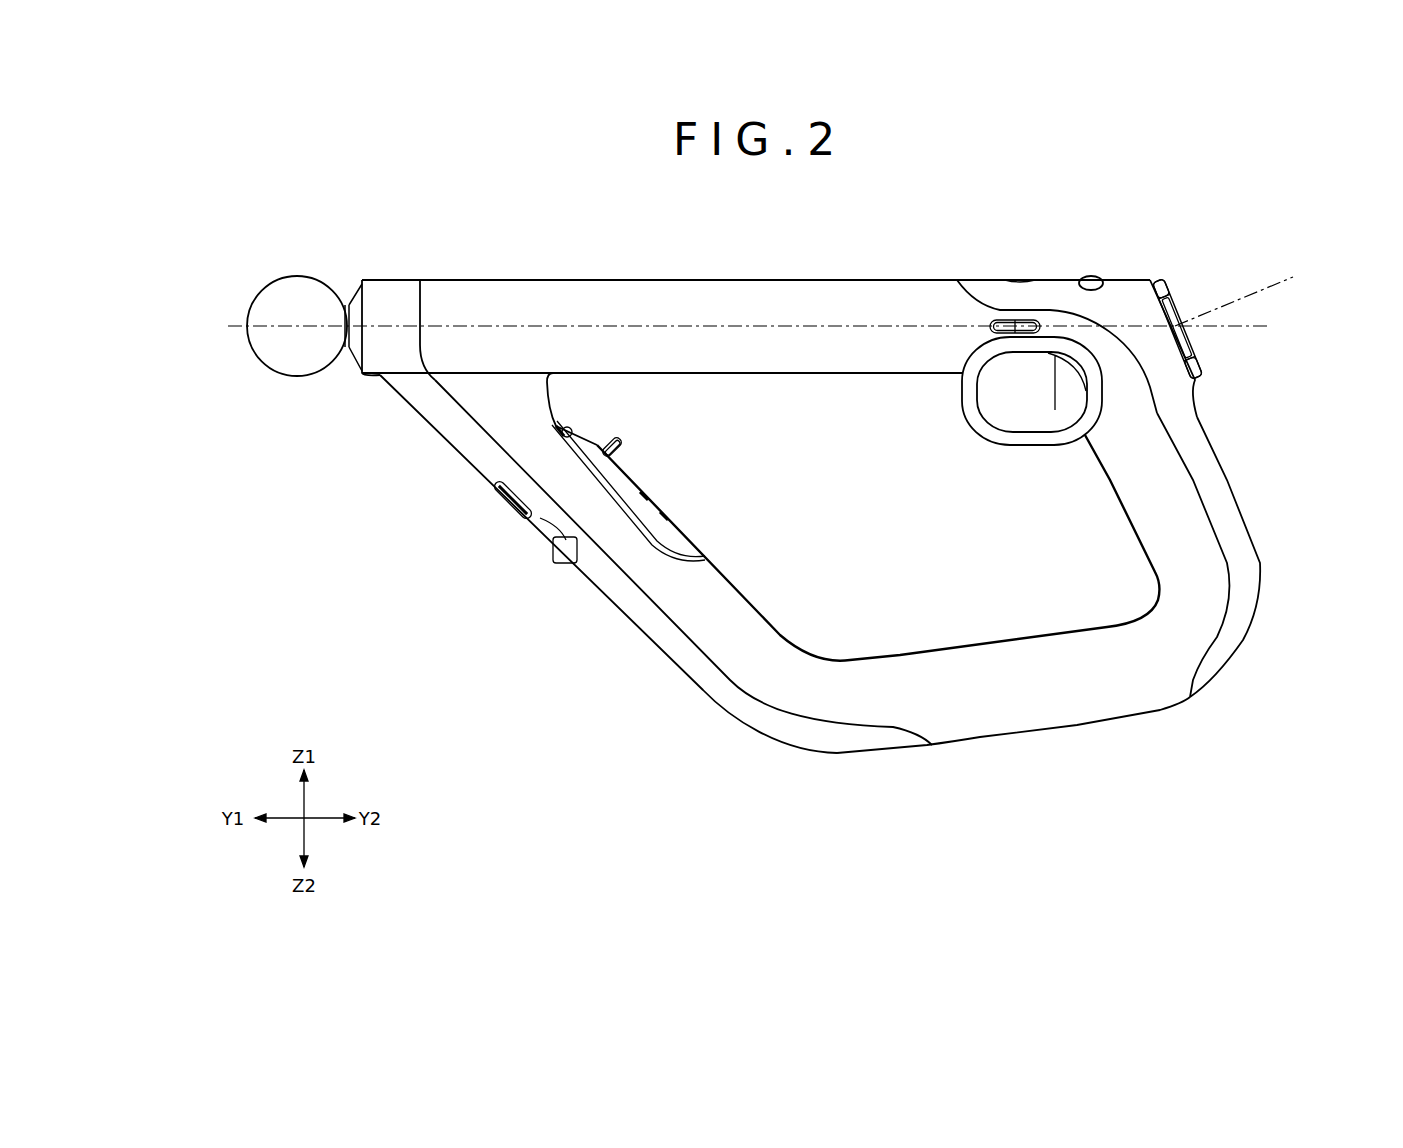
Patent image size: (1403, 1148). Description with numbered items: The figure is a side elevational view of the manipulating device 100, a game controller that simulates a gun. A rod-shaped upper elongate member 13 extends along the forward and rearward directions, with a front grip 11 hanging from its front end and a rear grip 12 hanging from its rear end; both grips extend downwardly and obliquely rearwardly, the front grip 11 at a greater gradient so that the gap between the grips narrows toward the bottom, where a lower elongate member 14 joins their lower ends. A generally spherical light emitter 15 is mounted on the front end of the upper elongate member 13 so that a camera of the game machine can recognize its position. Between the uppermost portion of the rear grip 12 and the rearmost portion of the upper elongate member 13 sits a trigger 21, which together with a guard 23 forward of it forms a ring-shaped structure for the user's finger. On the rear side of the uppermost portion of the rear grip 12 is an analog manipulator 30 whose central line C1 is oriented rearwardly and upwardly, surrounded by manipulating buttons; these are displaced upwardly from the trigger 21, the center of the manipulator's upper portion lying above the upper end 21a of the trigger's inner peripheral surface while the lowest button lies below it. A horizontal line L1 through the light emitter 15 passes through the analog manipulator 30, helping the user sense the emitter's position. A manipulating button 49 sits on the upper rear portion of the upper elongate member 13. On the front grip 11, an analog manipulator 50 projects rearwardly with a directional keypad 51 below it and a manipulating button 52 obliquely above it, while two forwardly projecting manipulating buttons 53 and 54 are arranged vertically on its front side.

The manipulating device 100 is at (927, 214).
The front grip 11 is at (647, 577).
The rear grip 12 is at (1197, 493).
The upper elongate member 13 is at (722, 302).
The lower elongate member 14 is at (1025, 713).
The light emitter 15 is at (297, 300).
The trigger 21 is at (1068, 408).
The upper end of the inner peripheral surface of the trigger 21a is at (1056, 368).
The guard 23 is at (982, 420).
The analog manipulator 30 is at (1152, 325).
The manipulating button 49 is at (1093, 272).
The analog manipulator 50 is at (615, 440).
The directional keypad 51 is at (647, 500).
The manipulating button 52 is at (553, 423).
The manipulating button 53 is at (515, 497).
The manipulating button 54 is at (548, 545).
The horizontal line L1 is at (747, 326).
The central line C1 is at (1252, 294).